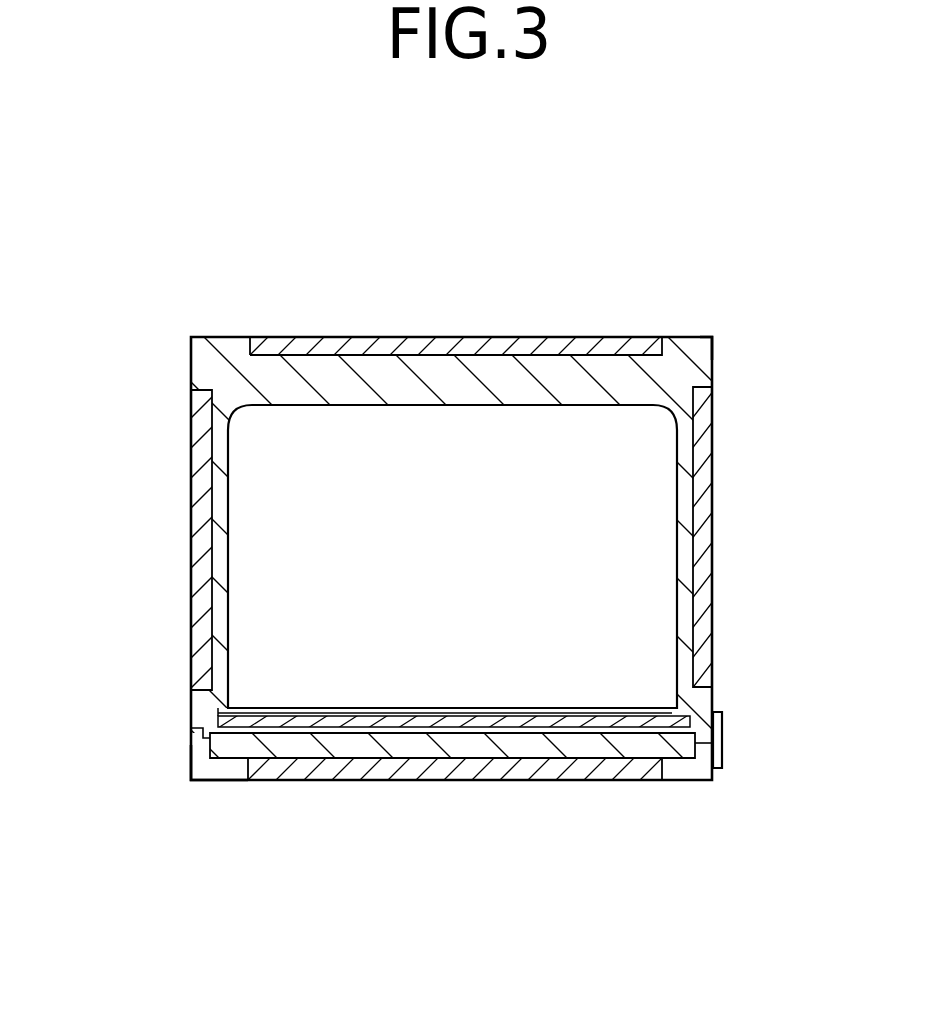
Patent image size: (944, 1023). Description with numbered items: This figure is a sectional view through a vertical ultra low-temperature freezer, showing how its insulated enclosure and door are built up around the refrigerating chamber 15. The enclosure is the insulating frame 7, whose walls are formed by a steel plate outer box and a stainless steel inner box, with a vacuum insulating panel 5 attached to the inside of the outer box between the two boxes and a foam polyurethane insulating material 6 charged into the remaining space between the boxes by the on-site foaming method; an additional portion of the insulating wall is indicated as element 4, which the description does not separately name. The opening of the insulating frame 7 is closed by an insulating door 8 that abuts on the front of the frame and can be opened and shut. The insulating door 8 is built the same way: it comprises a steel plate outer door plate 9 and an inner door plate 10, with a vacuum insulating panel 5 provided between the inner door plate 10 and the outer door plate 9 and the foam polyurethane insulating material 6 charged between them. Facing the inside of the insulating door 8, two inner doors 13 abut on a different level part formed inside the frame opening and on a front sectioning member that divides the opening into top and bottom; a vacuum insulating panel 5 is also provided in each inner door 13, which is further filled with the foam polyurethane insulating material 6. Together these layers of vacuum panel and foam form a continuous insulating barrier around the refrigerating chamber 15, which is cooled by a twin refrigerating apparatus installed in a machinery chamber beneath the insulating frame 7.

The top wall of casing 4 is at (612, 372).
The vacuum insulating panel 5 is at (463, 348).
The foam polyurethane insulating material 6 is at (227, 374).
The insulating frame 7 is at (715, 350).
The insulating door 8 is at (700, 785).
The outer door plate 9 is at (213, 785).
The inner door plate 10 is at (314, 726).
The inner door 13 is at (433, 715).
The refrigerating chamber 15 is at (653, 537).